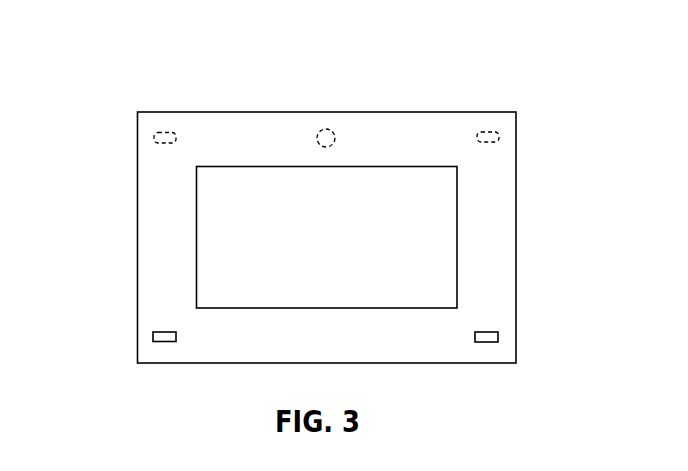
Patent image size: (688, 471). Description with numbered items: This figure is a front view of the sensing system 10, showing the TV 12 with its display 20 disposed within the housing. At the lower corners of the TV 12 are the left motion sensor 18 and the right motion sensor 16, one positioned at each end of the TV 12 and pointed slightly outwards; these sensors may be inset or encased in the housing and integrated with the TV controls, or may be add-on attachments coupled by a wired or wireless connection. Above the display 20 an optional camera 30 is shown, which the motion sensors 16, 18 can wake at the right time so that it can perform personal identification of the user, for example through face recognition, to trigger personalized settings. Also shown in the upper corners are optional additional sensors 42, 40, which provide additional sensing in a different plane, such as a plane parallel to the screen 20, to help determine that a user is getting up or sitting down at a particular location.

The sensing system 10 is at (110, 50).
The TV 12 is at (215, 363).
The right motion sensor 16 is at (492, 332).
The left motion sensor 18 is at (155, 332).
The display 20 is at (457, 235).
The camera 30 is at (331, 131).
The additional sensor 40 is at (490, 130).
The additional sensor 42 is at (154, 143).